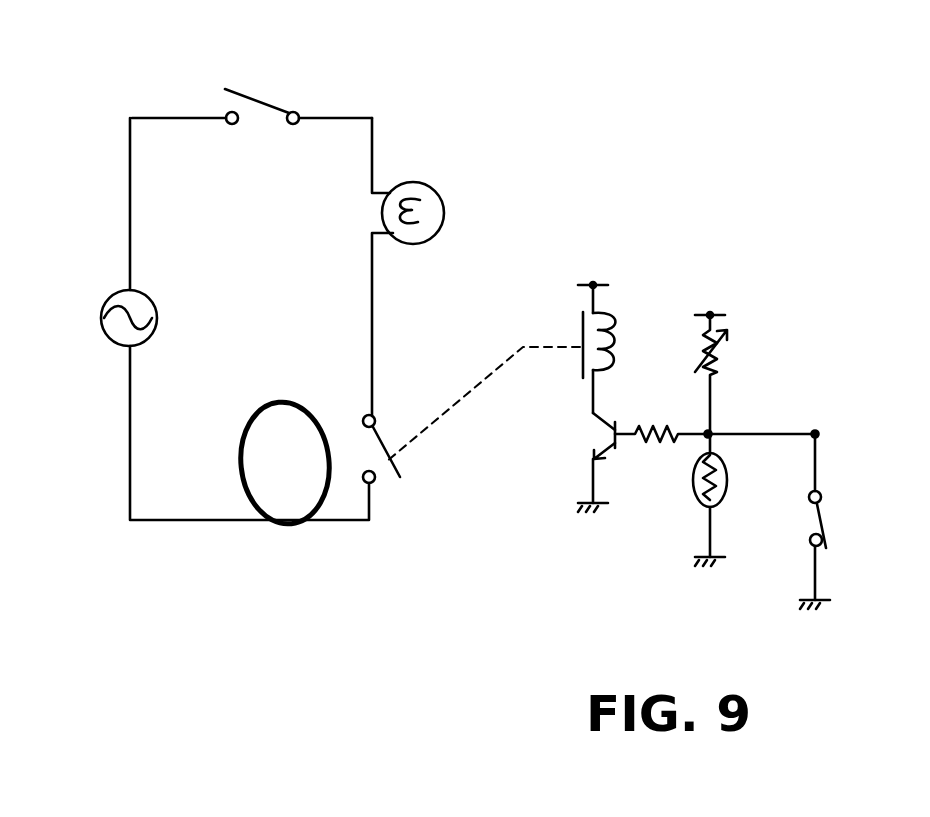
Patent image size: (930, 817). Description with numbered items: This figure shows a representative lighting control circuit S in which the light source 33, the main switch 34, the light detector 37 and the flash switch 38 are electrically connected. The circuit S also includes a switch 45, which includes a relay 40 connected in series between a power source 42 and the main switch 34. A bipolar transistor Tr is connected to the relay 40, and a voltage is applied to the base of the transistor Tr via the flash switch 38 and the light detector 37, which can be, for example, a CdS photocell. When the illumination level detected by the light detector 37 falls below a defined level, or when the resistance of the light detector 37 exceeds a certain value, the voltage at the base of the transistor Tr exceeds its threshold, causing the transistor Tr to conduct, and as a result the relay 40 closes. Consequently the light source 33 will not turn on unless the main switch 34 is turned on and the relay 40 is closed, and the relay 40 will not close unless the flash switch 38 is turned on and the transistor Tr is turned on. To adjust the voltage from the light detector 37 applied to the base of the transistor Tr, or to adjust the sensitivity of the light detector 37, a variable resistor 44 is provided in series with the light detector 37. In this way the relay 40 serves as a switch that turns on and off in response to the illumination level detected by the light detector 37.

The main switch 34 is at (290, 90).
The lighting control circuit S is at (384, 104).
The light source 33 is at (459, 194).
The power source 42 is at (110, 280).
The switch 45 is at (351, 458).
The relay 40 is at (628, 306).
The bipolar transistor Tr is at (624, 462).
The variable resistor 44 is at (744, 355).
The light detector 37 is at (677, 518).
The flash switch 38 is at (852, 506).